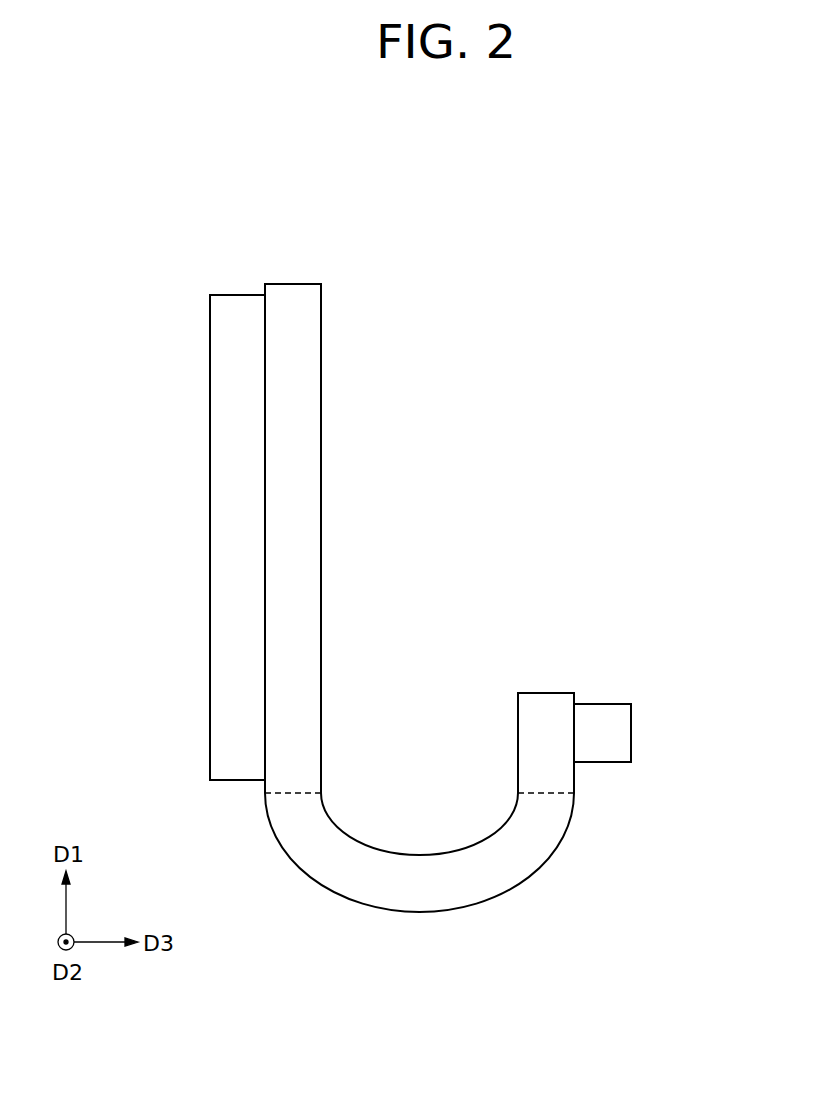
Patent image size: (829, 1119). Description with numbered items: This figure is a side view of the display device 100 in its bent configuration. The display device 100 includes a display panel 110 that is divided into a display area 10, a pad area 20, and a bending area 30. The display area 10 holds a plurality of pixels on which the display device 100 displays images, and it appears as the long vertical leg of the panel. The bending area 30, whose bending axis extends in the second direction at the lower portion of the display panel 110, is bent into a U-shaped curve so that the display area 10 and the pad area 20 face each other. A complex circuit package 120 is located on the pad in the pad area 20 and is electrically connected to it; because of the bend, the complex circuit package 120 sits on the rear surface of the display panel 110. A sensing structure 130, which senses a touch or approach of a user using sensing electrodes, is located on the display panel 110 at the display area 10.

The display device 100 is at (628, 274).
The display panel 110 is at (477, 752).
The display area 10 is at (322, 762).
The pad area 20 is at (518, 762).
The bending area 30 is at (415, 854).
The sensing structure 130 is at (209, 658).
The complex circuit package 120 is at (632, 731).